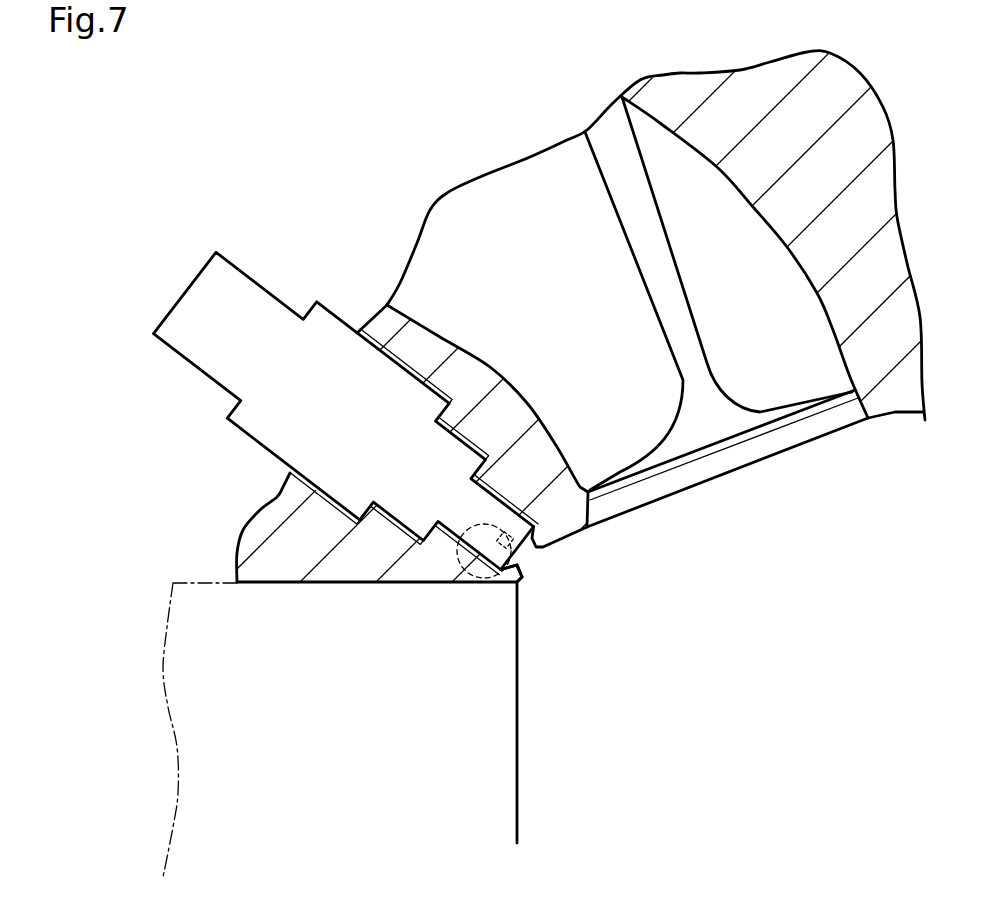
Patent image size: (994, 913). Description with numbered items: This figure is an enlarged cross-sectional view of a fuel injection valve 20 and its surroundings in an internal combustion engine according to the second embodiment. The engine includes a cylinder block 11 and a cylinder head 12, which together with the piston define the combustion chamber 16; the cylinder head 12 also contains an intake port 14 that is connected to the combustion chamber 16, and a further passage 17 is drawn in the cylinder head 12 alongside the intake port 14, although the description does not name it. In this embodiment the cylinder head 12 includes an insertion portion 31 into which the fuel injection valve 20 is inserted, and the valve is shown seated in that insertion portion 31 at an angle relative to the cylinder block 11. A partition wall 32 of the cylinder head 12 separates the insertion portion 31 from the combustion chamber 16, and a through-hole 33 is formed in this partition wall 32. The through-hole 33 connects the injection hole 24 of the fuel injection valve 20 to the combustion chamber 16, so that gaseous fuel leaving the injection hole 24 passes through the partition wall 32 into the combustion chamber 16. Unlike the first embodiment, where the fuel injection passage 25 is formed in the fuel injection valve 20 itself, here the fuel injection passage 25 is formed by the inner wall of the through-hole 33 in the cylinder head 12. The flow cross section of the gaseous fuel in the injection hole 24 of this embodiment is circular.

The cylinder block 11 is at (167, 703).
The cylinder head 12 is at (382, 320).
The intake port 14 is at (845, 345).
The combustion chamber 16 is at (540, 727).
The passage 17 is at (637, 282).
The fuel injection valve 20 is at (320, 302).
The injection hole 24 is at (462, 568).
The fuel injection passage 25 is at (521, 567).
The insertion portion 31 is at (412, 388).
The partition wall 32 is at (547, 547).
The through-hole 33 is at (523, 578).